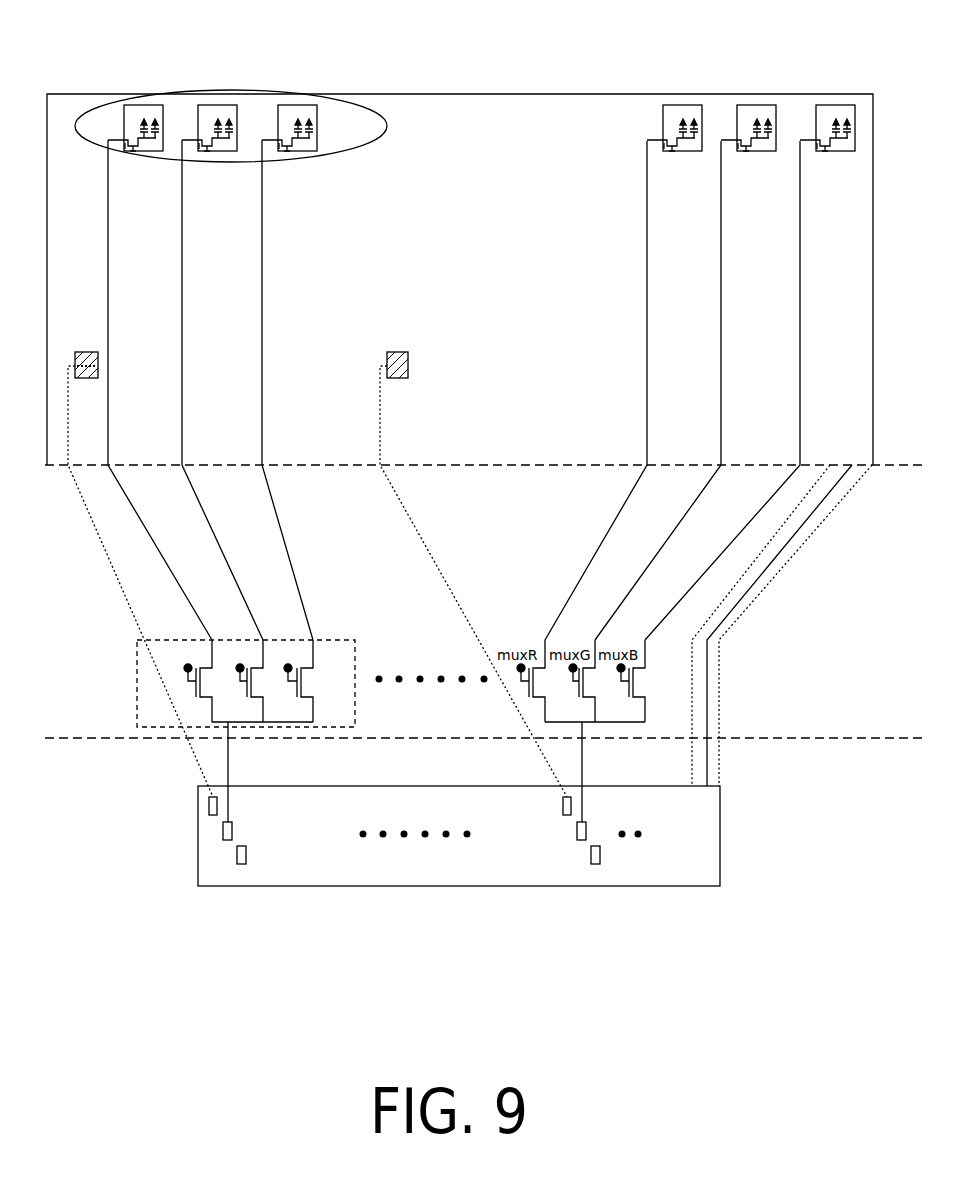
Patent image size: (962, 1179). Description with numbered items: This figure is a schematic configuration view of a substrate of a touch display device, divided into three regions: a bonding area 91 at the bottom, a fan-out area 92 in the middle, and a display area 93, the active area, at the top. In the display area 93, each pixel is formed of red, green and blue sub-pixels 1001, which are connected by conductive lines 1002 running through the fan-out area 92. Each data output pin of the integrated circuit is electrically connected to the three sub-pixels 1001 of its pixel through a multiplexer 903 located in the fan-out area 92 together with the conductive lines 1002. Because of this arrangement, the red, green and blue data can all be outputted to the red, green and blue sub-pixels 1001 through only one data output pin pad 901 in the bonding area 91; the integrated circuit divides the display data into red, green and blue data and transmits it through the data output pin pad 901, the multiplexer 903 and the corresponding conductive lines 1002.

The sub-pixels 1001 is at (300, 104).
The conductive lines 1002 is at (155, 545).
The multiplexer 903 is at (135, 692).
The display area 93 is at (868, 458).
The fan-out area 92 is at (914, 465).
The data output pin pad 901 is at (225, 832).
The bonding area 91 is at (287, 886).